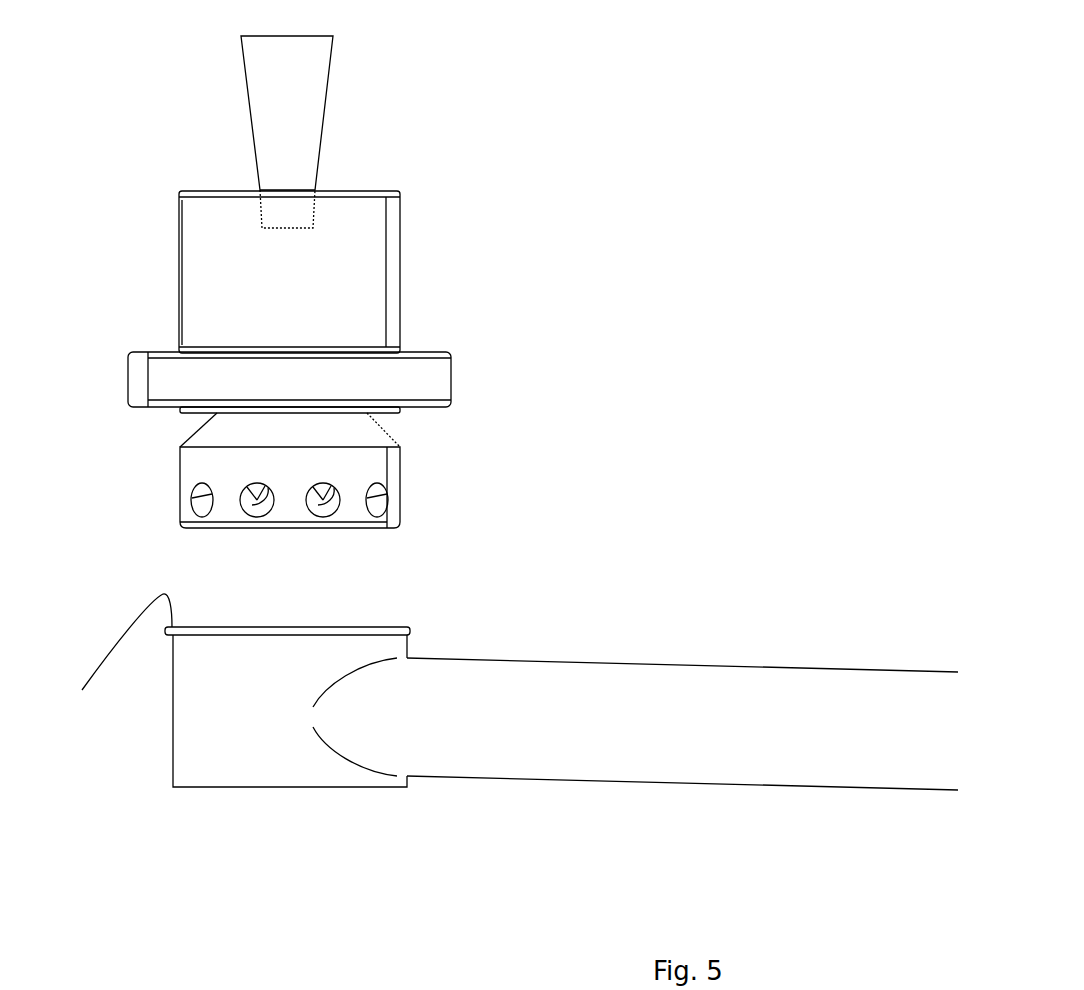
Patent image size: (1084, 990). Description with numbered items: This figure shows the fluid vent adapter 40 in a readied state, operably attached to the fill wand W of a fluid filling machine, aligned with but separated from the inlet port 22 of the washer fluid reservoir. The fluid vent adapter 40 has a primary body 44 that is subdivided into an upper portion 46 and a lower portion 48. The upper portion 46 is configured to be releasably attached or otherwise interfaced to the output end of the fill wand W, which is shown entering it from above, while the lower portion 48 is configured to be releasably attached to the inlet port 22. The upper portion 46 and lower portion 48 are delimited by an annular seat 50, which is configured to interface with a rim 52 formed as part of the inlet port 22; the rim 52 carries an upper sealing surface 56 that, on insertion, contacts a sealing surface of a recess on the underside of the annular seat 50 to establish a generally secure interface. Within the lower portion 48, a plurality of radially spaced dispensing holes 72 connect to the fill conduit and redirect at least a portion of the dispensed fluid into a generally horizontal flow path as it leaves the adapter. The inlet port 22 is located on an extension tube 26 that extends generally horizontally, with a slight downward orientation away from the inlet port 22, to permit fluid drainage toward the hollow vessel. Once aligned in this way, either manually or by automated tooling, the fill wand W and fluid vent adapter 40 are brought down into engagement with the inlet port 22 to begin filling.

The fill wand W is at (272, 98).
The fluid vent adapter 40 is at (430, 140).
The primary body 44 is at (402, 297).
The upper portion 46 is at (205, 275).
The annular seat 50 is at (430, 380).
The lower portion 48 is at (190, 460).
The radially spaced dispensing holes 72 is at (378, 505).
The rim 52 is at (410, 633).
The inlet port 22 is at (195, 725).
The upper sealing surface 56 is at (108, 656).
The extension tube 26 is at (607, 673).